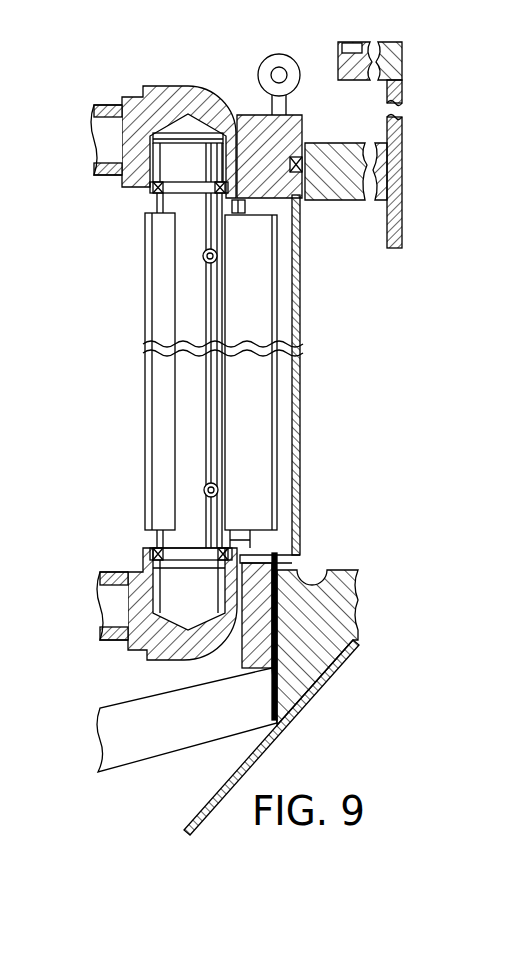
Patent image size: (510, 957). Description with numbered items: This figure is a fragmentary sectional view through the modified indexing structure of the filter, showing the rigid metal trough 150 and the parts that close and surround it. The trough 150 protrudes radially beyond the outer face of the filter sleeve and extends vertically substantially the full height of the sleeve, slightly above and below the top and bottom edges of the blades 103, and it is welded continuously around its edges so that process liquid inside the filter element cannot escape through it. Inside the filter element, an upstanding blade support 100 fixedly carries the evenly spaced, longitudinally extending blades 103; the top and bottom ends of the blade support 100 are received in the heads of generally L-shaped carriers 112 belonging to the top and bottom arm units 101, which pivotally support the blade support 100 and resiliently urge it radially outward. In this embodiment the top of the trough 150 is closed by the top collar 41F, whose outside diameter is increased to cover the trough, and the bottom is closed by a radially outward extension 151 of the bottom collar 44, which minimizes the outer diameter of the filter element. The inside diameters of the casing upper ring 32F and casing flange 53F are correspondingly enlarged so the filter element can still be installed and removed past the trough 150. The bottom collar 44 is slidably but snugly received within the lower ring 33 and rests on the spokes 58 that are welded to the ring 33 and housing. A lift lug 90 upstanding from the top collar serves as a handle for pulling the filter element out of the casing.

The carrier 112 is at (182, 88).
The arm unit 101 is at (97, 100).
The lift lug 90 is at (283, 60).
The casing flange 53F is at (367, 42).
The upper ring 32F is at (378, 168).
The top collar 41F is at (245, 204).
The trough 150 is at (299, 314).
The blade support 100 is at (188, 407).
The blade 103 is at (265, 463).
The radially outward extension of the bottom collar 151 is at (313, 572).
The lower ring 33 is at (345, 605).
The bottom collar 44 is at (260, 630).
The spoke 58 is at (142, 742).